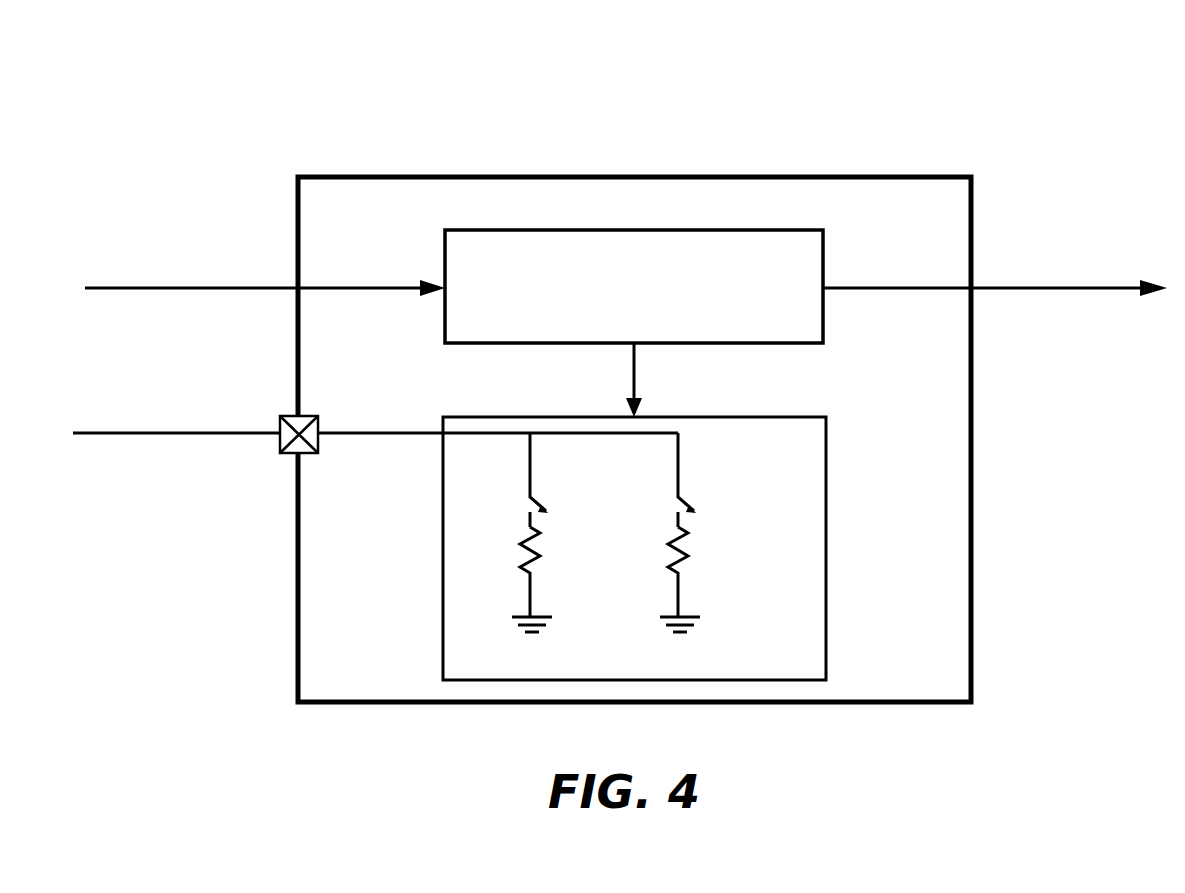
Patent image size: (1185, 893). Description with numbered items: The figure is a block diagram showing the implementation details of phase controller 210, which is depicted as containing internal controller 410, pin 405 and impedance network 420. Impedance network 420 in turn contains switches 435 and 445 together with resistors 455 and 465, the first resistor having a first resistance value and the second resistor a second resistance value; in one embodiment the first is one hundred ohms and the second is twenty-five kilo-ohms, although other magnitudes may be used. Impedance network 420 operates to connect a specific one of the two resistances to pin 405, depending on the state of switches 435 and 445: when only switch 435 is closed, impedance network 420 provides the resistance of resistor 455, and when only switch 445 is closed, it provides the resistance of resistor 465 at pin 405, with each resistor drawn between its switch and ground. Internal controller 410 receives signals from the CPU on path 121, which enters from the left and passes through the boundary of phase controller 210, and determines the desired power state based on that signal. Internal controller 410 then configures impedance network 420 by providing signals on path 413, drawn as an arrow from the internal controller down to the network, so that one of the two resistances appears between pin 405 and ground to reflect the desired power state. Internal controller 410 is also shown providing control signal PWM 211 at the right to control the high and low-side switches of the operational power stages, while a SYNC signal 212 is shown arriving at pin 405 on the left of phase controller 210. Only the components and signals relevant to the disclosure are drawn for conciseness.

The phase controller 210 is at (540, 136).
The path 121 is at (122, 288).
The internal controller 410 is at (655, 312).
The control signal PWM 211 is at (1035, 290).
The SYNC signal 212 is at (150, 470).
The pin 405 is at (318, 453).
The path 413 is at (637, 370).
The impedance network 420 is at (826, 522).
The switch 435 is at (548, 512).
The resistor 455 is at (538, 571).
The switch 445 is at (696, 512).
The resistor 465 is at (690, 560).